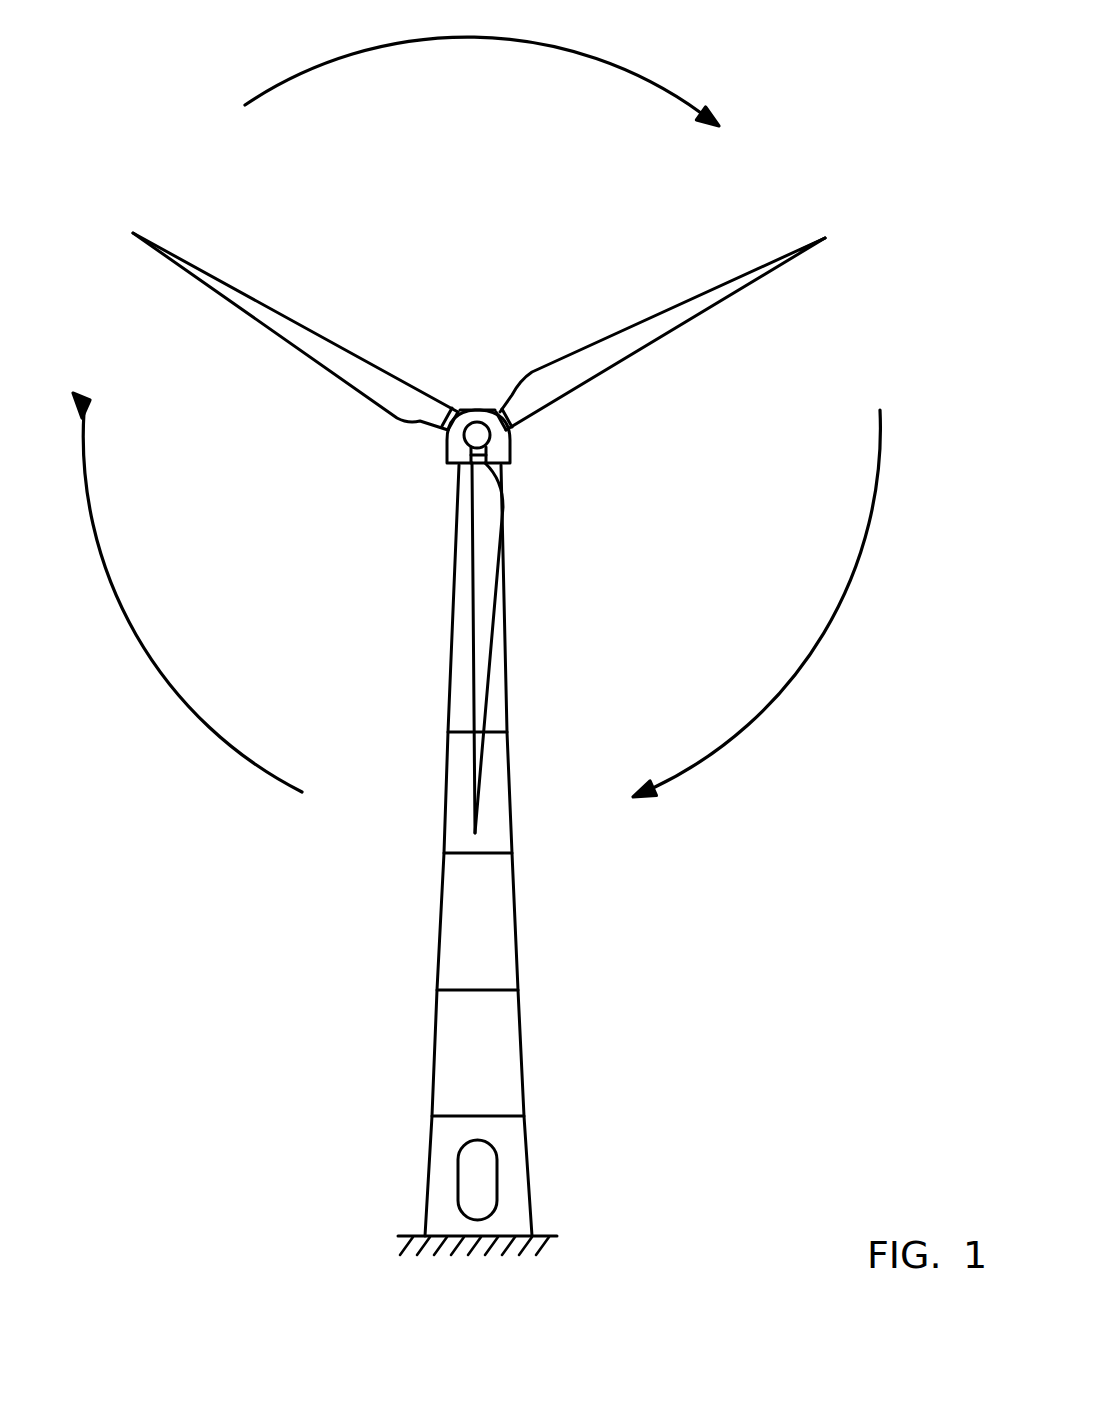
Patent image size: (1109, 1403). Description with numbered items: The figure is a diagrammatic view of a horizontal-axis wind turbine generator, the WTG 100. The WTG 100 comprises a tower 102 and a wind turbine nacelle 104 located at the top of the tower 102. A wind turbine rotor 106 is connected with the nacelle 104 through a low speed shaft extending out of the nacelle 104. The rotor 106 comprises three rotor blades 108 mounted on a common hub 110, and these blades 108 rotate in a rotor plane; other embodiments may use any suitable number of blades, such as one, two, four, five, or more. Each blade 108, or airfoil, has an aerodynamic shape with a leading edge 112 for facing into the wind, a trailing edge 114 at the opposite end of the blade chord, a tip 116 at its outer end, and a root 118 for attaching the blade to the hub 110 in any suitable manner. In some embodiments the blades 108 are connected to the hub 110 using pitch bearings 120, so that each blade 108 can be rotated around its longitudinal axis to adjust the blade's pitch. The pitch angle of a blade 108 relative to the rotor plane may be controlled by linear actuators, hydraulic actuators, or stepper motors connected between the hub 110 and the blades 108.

The horizontal-axis WTG 100 is at (381, 1061).
The tower 102 is at (503, 925).
The wind turbine nacelle 104 is at (506, 463).
The wind turbine rotor 106 is at (401, 469).
The rotor blades 108 is at (250, 305).
The hub 110 is at (477, 428).
The leading edge 112 is at (693, 317).
The trailing edge 114 is at (700, 295).
The tip 116 is at (855, 219).
The root 118 is at (575, 457).
The pitch bearings 120 is at (428, 400).